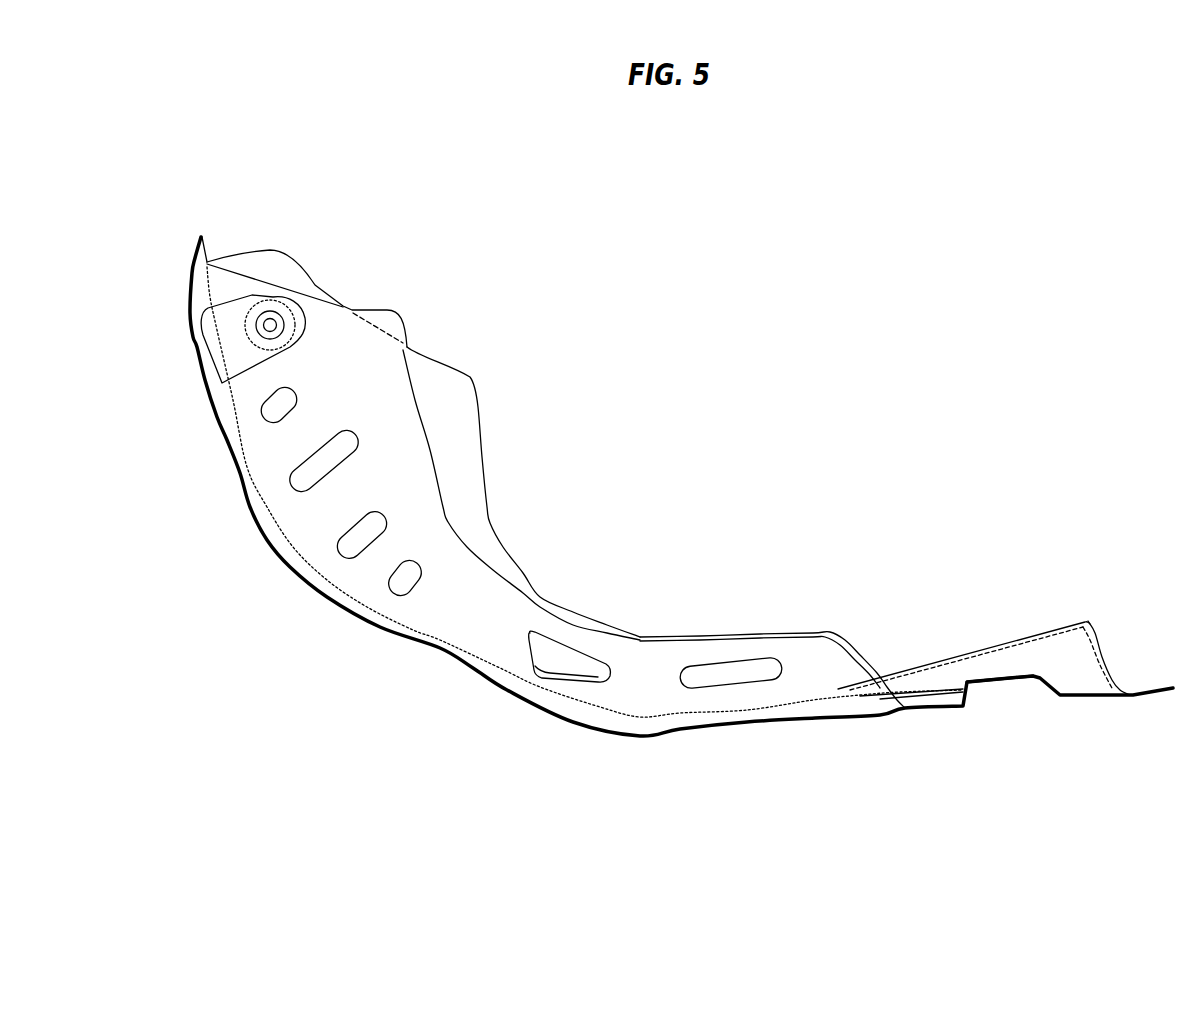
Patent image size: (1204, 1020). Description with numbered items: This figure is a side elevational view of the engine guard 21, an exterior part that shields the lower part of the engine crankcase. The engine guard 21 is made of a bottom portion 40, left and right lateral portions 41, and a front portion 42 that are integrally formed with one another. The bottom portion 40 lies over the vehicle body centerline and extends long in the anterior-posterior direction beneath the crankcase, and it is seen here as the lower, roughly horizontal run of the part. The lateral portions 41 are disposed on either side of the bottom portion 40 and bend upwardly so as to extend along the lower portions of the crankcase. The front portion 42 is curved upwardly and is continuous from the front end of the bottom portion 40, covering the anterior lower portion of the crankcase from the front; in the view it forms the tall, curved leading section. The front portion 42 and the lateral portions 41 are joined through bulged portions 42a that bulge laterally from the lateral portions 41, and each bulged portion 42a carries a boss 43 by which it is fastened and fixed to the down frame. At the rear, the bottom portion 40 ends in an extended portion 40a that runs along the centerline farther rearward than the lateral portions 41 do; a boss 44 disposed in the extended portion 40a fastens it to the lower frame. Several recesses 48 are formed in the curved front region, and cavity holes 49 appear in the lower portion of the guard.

The engine guard 21 is at (550, 403).
The bottom portion 40 is at (887, 702).
The extended portion 40a is at (993, 647).
The lateral portion 41 is at (658, 652).
The front portion 42 is at (200, 360).
The bulged portion 42a is at (388, 310).
The boss 43 is at (273, 297).
The boss 44 is at (1107, 647).
The recess 48 is at (258, 412).
The cavity hole 49 is at (533, 670).